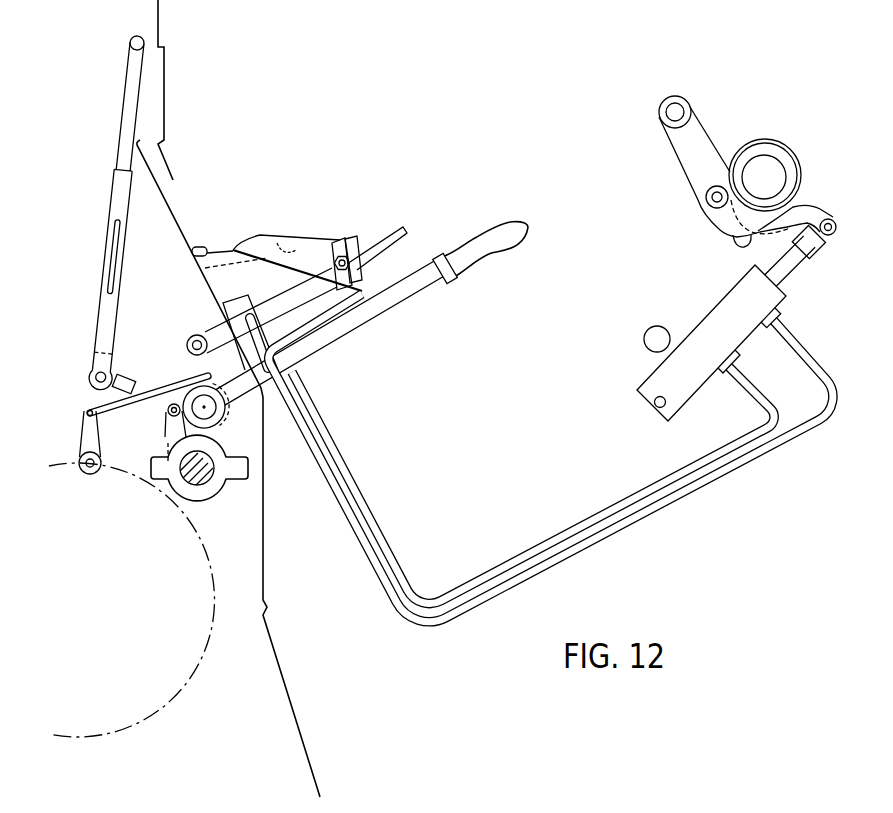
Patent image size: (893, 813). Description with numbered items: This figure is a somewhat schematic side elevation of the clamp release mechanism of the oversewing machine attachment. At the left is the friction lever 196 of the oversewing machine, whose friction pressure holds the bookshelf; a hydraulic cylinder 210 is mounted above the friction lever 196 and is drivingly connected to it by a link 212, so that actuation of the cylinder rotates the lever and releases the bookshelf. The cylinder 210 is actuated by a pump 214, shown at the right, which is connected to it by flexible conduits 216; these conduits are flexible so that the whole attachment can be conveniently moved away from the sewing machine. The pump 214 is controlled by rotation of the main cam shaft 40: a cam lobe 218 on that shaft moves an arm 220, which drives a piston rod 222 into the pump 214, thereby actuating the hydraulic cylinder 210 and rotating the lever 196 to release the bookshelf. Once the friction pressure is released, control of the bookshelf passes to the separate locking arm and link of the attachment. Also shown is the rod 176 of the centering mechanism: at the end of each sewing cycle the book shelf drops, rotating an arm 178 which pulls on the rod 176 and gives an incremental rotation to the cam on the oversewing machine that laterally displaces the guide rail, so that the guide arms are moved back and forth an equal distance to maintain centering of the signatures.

The rod 176 is at (123, 129).
The arm 178 is at (151, 378).
The hydraulic cylinder 210 is at (221, 310).
The link 212 is at (187, 357).
The friction lever 196 is at (410, 297).
The flexible conduits 216 is at (568, 553).
The pump 214 is at (700, 323).
The piston rod 222 is at (798, 265).
The cam lobe 218 is at (735, 243).
The arm 220 is at (700, 177).
The main cam shaft 40 is at (770, 173).